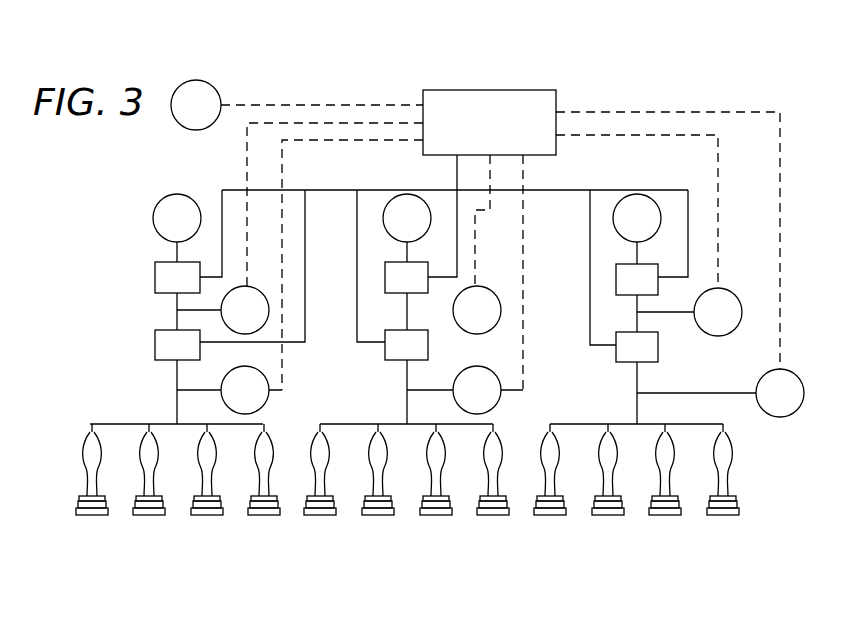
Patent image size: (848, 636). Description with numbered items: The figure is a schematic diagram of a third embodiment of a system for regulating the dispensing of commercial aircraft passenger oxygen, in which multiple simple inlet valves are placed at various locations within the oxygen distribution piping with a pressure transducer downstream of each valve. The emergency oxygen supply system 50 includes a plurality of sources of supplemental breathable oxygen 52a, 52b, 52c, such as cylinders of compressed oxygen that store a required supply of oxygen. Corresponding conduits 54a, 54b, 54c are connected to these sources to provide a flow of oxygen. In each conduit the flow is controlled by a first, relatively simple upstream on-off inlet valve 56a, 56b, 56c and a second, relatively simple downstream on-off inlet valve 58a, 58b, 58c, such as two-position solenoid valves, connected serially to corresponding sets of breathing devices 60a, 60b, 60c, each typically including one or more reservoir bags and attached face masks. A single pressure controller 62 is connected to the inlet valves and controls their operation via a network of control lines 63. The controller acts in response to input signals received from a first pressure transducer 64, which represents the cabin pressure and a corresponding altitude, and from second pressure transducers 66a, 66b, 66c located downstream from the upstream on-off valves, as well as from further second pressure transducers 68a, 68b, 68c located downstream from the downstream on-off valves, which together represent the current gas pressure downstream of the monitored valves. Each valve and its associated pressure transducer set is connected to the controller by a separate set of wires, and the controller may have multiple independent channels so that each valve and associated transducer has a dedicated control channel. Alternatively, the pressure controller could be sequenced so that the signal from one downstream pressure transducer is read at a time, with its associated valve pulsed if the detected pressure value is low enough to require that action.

The emergency oxygen supply system 50 is at (630, 66).
The source of supplemental breathable oxygen 52a is at (166, 200).
The source of supplemental breathable oxygen 52b is at (400, 200).
The source of supplemental breathable oxygen 52c is at (628, 200).
The conduit 54a is at (177, 250).
The conduit 54b is at (407, 250).
The conduit 54c is at (637, 253).
The first upstream on-off inlet valve 56a is at (155, 277).
The first upstream on-off inlet valve 56b is at (385, 279).
The first upstream on-off inlet valve 56c is at (616, 281).
The second downstream on-off inlet valve 58a is at (155, 344).
The second downstream on-off inlet valve 58b is at (385, 348).
The second downstream on-off inlet valve 58c is at (616, 352).
The set of breathing devices 60a is at (190, 530).
The set of breathing devices 60b is at (420, 530).
The set of breathing devices 60c is at (650, 530).
The pressure controller 62 is at (470, 90).
The network of control lines 63 is at (234, 190).
The first pressure transducer 64 is at (174, 98).
The second pressure transducer 66a is at (270, 296).
The second pressure transducer 66b is at (493, 290).
The second pressure transducer 66c is at (736, 292).
The second pressure transducer 68a is at (243, 367).
The second pressure transducer 68b is at (488, 366).
The second pressure transducer 68c is at (770, 370).